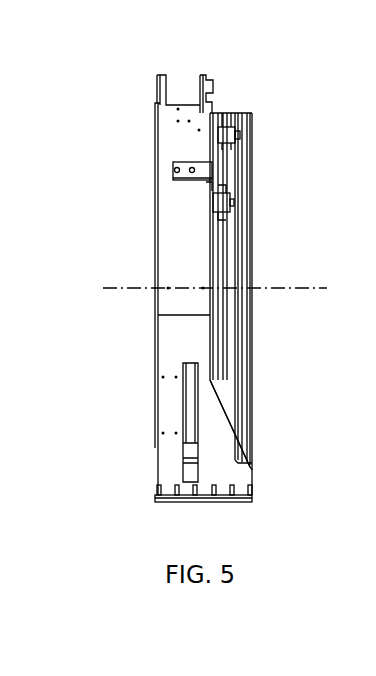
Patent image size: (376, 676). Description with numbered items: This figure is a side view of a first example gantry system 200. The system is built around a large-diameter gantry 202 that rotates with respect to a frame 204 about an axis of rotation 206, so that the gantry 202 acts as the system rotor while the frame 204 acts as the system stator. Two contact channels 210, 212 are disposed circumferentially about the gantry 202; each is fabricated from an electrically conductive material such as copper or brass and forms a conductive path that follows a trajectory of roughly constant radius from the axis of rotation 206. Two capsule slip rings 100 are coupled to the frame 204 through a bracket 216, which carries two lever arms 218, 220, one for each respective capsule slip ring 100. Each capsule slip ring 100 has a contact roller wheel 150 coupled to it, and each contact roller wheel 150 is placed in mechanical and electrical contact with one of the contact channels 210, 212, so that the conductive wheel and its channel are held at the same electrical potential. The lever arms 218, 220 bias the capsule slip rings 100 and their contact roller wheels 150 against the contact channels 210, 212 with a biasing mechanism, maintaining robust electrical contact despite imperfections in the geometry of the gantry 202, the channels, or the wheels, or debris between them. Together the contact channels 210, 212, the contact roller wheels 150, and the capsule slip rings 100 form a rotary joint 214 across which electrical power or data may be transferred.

The gantry system 200 is at (288, 92).
The capsule slip ring 100 is at (227, 122).
The contact roller wheel 150 is at (252, 127).
The bracket 216 is at (198, 165).
The lever arm 218 is at (252, 163).
The rotary joint 214 is at (268, 182).
The lever arm 220 is at (205, 187).
The contact channel 210 is at (252, 193).
The contact channel 212 is at (252, 257).
The axis of rotation 206 is at (320, 292).
The gantry 202 is at (230, 392).
The frame 204 is at (158, 467).